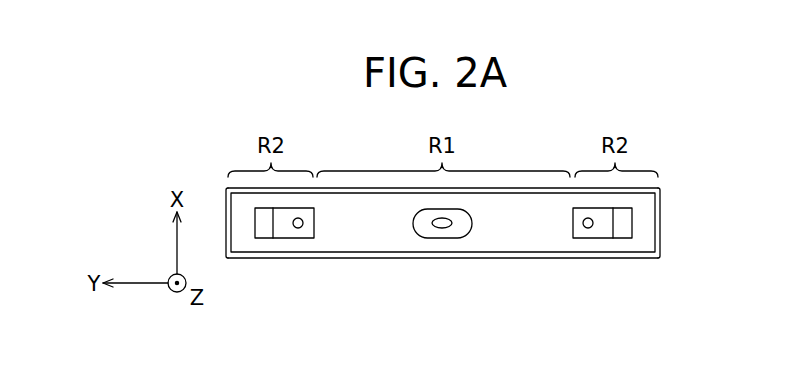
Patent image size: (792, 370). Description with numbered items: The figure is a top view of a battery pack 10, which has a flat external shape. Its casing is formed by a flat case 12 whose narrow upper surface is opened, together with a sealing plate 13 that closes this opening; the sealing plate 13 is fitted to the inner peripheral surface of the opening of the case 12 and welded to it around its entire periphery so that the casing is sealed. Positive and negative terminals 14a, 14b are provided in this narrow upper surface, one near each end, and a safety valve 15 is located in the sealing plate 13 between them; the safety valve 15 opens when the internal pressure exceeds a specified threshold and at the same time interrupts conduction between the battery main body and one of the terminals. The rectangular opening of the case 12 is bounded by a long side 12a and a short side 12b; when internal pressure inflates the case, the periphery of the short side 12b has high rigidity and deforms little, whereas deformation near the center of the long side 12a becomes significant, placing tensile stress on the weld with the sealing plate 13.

The battery pack 10 is at (461, 217).
The case 12 is at (461, 218).
The long side 12a is at (499, 186).
The short side 12b is at (222, 220).
The sealing plate 13 is at (357, 232).
The positive terminal 14a is at (297, 230).
The negative terminal 14b is at (586, 230).
The safety valve 15 is at (443, 239).